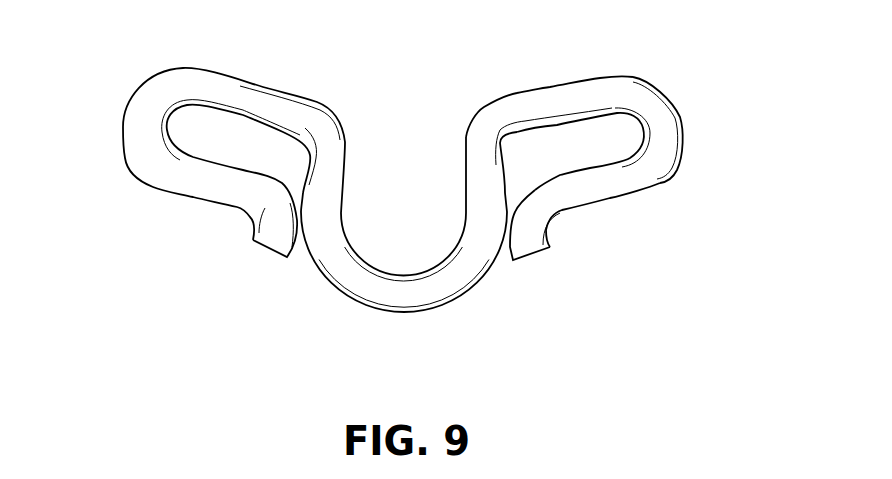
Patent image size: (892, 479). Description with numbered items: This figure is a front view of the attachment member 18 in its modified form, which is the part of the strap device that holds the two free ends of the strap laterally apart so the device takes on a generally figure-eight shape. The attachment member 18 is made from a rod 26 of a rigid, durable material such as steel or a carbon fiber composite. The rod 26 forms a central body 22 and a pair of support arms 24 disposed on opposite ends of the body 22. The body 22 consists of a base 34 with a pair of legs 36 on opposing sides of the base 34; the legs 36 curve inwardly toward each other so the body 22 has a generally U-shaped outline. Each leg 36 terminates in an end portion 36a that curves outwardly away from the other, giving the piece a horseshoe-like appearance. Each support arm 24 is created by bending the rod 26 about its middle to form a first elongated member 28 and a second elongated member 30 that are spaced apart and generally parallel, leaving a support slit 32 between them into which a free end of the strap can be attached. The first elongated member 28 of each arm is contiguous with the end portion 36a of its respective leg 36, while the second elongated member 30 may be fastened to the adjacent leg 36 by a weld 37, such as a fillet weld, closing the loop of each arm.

The attachment member 18 is at (282, 312).
The body 22 is at (370, 327).
The support arms 24 is at (118, 122).
The rod 26 is at (510, 297).
The first elongated member 28 is at (548, 97).
The second elongated member 30 is at (603, 208).
The support slit 32 is at (587, 140).
The base 34 is at (443, 287).
The legs 36 is at (466, 223).
The end portion 36a is at (347, 140).
The weld 37 is at (492, 218).